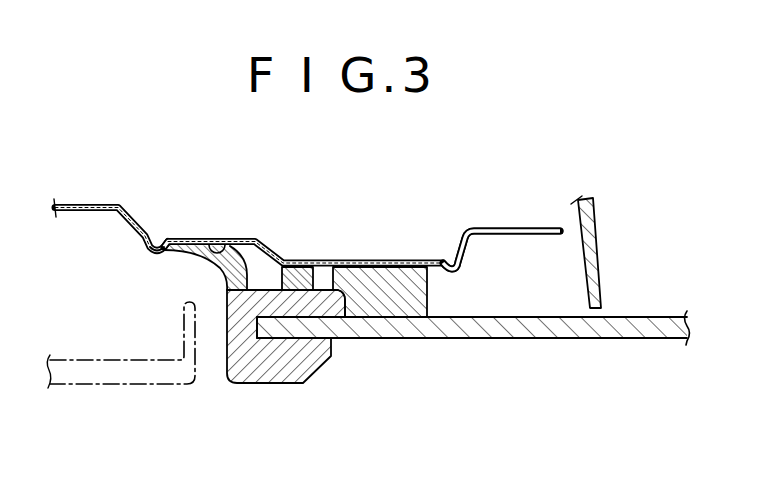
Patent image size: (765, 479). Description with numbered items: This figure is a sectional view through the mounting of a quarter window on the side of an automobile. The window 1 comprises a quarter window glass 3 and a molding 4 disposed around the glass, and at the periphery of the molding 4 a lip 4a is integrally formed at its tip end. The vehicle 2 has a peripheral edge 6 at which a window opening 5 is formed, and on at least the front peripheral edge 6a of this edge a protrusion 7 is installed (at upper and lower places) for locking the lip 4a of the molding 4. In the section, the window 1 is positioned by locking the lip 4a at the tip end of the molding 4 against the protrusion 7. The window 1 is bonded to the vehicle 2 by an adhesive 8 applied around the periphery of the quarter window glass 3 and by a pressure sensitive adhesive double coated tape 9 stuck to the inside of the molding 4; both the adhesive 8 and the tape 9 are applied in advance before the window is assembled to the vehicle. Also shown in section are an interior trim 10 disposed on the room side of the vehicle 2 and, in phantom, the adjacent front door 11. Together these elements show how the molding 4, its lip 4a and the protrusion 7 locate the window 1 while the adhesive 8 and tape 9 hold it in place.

The window 1 is at (383, 343).
The vehicle 2 is at (66, 214).
The quarter window glass 3 is at (506, 342).
The molding 4 is at (270, 380).
The lip 4a is at (178, 250).
The window opening 5 is at (645, 273).
The peripheral edge 6 is at (242, 237).
The front peripheral edge 6a is at (469, 232).
The protrusion 7 is at (152, 254).
The adhesive 8 is at (427, 288).
The pressure sensitive adhesive double coated tape 9 is at (297, 275).
The interior trim 10 is at (590, 232).
The front door 11 is at (110, 388).